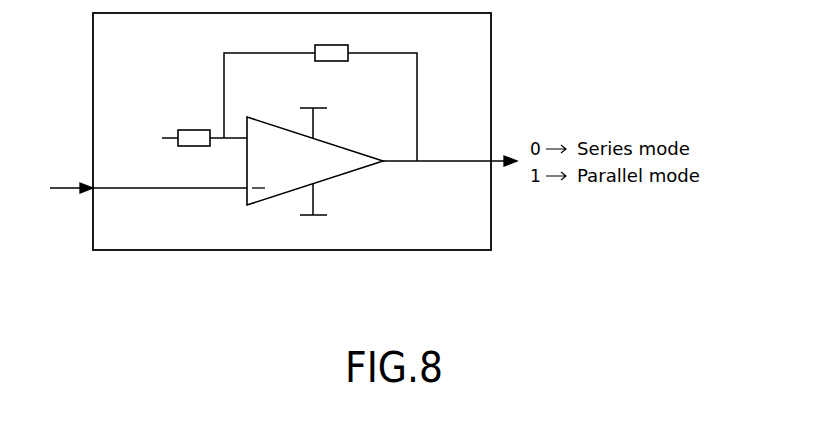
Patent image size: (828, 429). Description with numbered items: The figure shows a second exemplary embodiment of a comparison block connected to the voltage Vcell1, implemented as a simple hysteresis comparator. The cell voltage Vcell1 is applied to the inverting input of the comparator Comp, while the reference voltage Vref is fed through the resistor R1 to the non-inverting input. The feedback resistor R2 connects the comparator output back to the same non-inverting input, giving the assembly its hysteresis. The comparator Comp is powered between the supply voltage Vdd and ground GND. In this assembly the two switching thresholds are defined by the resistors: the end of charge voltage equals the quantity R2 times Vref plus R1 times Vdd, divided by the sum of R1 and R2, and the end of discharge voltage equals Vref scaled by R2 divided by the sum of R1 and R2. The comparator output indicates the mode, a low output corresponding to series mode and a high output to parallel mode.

The resistor R1 is at (194, 125).
The resistor R2 is at (331, 45).
The comparator Comp is at (315, 161).
The supply voltage Vdd is at (312, 109).
The ground GND is at (309, 211).
The reference voltage Vref is at (149, 133).
The cell voltage Vcell1 is at (140, 175).